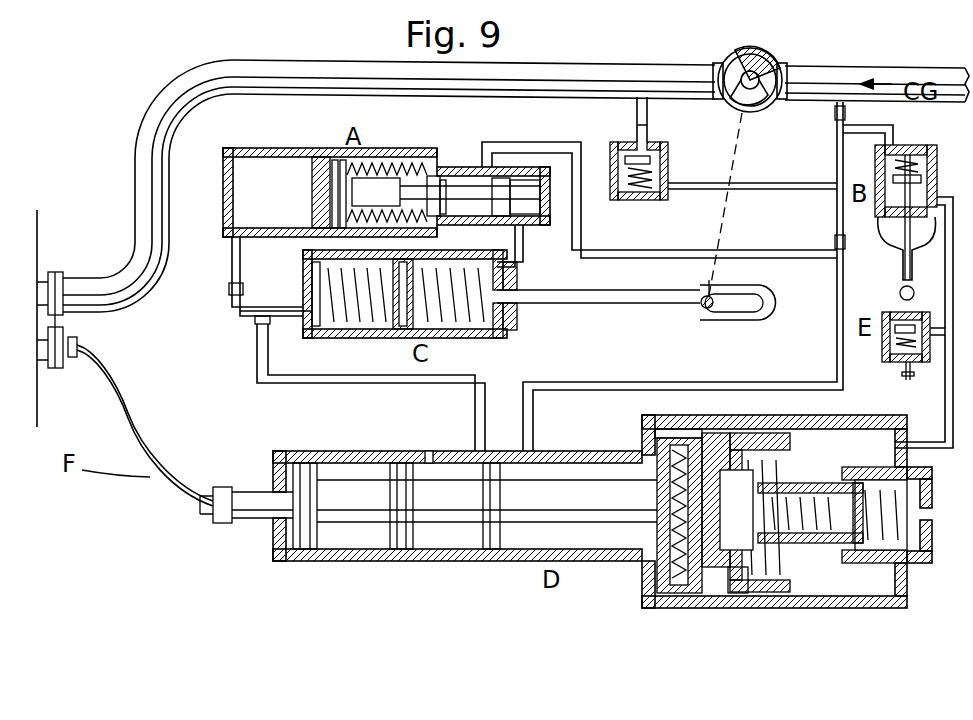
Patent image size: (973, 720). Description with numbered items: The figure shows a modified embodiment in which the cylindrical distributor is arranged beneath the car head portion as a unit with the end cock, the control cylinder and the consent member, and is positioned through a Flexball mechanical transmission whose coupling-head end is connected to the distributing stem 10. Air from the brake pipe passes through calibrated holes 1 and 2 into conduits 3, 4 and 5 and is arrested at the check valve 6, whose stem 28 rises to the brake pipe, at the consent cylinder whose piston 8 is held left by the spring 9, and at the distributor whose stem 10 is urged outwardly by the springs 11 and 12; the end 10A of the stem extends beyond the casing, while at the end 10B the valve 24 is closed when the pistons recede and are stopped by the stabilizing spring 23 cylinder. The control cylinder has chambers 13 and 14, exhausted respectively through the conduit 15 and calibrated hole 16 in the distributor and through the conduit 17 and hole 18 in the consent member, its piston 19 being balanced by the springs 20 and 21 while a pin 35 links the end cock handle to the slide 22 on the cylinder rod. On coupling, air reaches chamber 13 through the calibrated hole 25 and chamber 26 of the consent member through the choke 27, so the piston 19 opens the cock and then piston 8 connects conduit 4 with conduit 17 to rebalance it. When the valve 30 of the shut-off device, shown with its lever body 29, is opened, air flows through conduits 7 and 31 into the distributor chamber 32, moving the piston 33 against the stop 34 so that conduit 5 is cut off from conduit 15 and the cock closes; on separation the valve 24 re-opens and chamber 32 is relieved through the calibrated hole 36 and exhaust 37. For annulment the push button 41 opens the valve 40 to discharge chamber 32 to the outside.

The calibrated hole 1 is at (830, 108).
The calibrated hole 2 is at (835, 243).
The conduit 3 is at (760, 182).
The conduit 4 is at (527, 142).
The conduit 5 is at (535, 417).
The check valve 6 is at (668, 168).
The conduit 7 is at (870, 128).
The piston 8 is at (383, 178).
The spring 9 is at (424, 168).
The distributing stem 10 is at (487, 517).
The end of stem 10A is at (253, 500).
The end of stem 10B is at (655, 575).
The spring 11 is at (678, 585).
The spring 12 is at (833, 580).
The chamber 13 is at (357, 326).
The chamber 14 is at (458, 322).
The conduit 15 is at (257, 360).
The calibrated hole 16 is at (428, 448).
The conduit 17 is at (527, 246).
The hole 18 is at (548, 192).
The piston 19 is at (396, 328).
The spring 20 is at (333, 322).
The spring 21 is at (497, 325).
The slide 22 is at (742, 313).
The stabilizing spring 23 is at (818, 540).
The valve 24 is at (678, 510).
The calibrated hole 25 is at (250, 323).
The chamber 26 is at (245, 200).
The choke or calibrated hole 27 is at (226, 302).
The valve stem 28 is at (647, 118).
The valve body 29 is at (903, 262).
The valve 30 is at (937, 155).
The conduit 31 is at (947, 447).
The distributor chamber 32 is at (872, 585).
The piston 33 is at (736, 580).
The stop 34 is at (718, 590).
The pin 35 is at (703, 310).
The calibrated hole 36 is at (718, 507).
The exhaust 37 is at (697, 418).
The valve 40 is at (884, 357).
The push button 41 is at (908, 376).